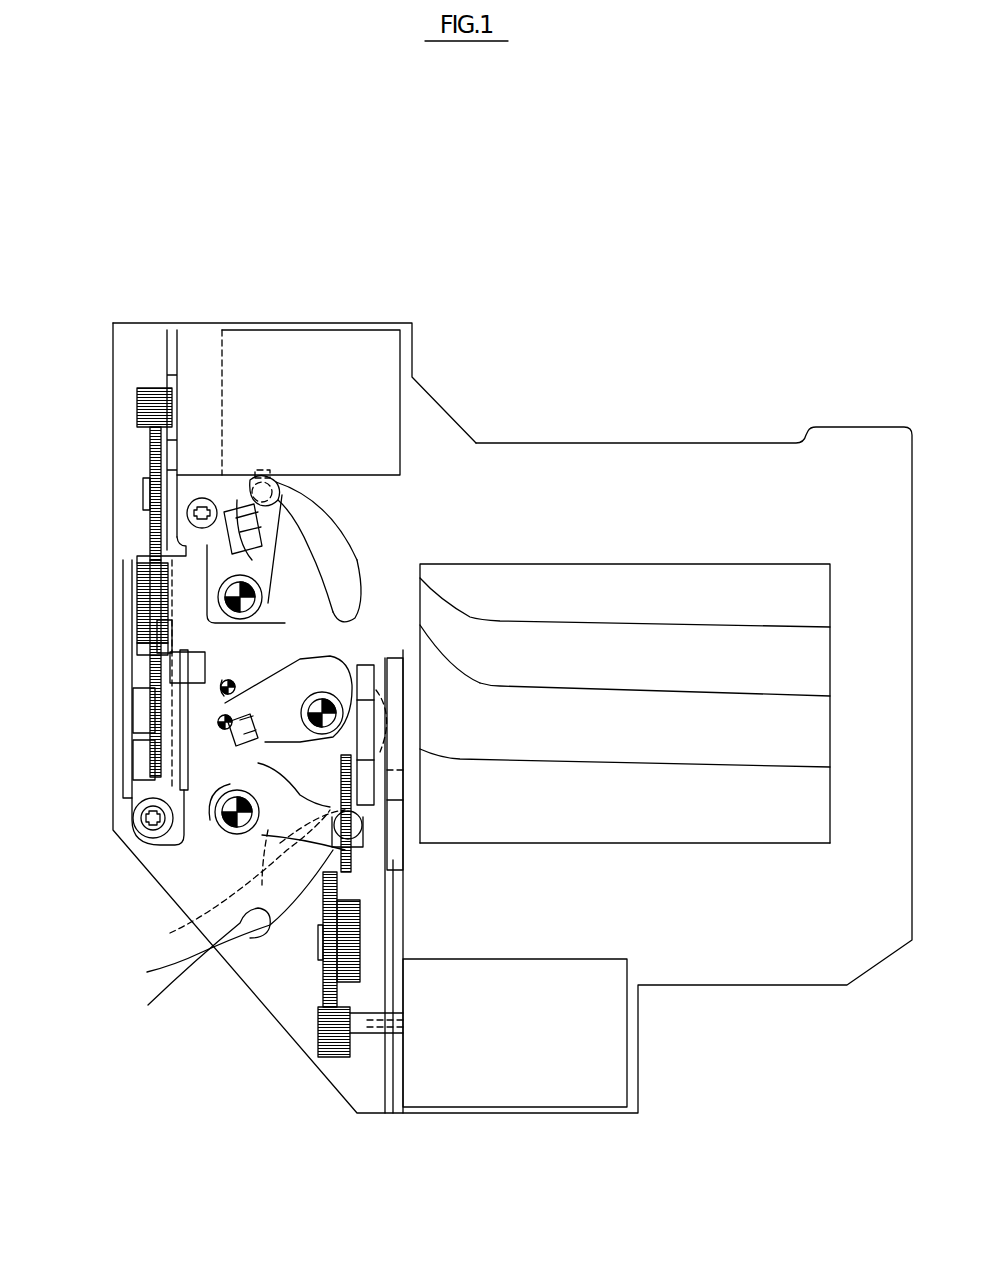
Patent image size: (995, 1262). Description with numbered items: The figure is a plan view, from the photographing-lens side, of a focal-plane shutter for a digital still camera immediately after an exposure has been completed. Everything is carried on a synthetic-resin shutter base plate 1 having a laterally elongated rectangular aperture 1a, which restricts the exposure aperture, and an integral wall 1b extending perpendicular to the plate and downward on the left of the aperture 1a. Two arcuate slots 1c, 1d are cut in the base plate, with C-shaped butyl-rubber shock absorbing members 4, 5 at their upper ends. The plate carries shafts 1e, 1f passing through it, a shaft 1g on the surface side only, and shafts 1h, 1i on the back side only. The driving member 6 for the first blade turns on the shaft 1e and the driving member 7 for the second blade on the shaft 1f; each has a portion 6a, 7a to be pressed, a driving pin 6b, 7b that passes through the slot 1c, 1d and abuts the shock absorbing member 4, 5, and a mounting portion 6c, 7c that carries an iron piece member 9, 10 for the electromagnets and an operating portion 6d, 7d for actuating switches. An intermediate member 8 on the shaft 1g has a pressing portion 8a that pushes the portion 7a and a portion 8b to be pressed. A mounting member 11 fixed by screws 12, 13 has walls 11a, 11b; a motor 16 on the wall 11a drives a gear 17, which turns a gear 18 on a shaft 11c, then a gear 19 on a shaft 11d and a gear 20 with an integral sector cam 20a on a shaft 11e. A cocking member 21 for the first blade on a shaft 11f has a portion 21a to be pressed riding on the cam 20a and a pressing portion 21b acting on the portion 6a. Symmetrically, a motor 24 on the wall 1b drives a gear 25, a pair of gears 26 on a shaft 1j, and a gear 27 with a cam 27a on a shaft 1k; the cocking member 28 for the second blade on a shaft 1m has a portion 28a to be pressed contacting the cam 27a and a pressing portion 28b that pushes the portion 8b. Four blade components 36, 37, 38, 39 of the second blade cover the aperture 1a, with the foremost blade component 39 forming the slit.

The shutter base plate 1 is at (769, 462).
The aperture 1a is at (665, 560).
The wall 1b is at (395, 897).
The arcuate slot 1c is at (400, 535).
The arcuate slot 1d is at (197, 973).
The shaft 1e is at (250, 603).
The shaft 1f is at (232, 833).
The shaft 1g is at (310, 693).
The shaft 1h is at (234, 682).
The shaft 1i is at (222, 731).
The shaft 1j is at (317, 950).
The shaft 1k is at (225, 916).
The shaft 1m is at (427, 657).
The shock absorbing member 4 is at (262, 478).
The shock absorbing member 5 is at (239, 880).
The driving member for the first blade 6 is at (272, 577).
The portion to be pressed 6a is at (215, 630).
The driving pin 6b is at (275, 505).
The mounting portion 6c is at (315, 525).
The operating portion 6d is at (255, 565).
The driving member for the second blade 7 is at (262, 835).
The portion to be pressed 7a is at (260, 810).
The driving pin 7b is at (387, 847).
The mounting portion 7c is at (265, 748).
The operating portion 7d is at (240, 836).
The intermediate member 8 is at (317, 667).
The pressing portion 8a is at (208, 696).
The portion to be pressed 8b is at (404, 745).
The iron piece member 9 is at (318, 530).
The iron piece member 10 is at (235, 725).
The mounting member 11 is at (130, 822).
The wall 11a is at (172, 362).
The wall 11b is at (128, 800).
The shaft 11c is at (148, 485).
The shaft 11d is at (137, 590).
The shaft 11e is at (170, 728).
The shaft 11f is at (347, 547).
The screw 12 is at (203, 497).
The screw 13 is at (153, 838).
The motor 16 is at (345, 345).
The gear 17 is at (148, 390).
The gear 18 is at (148, 452).
The gear 19 is at (170, 640).
The gear 20 is at (140, 690).
The cam 20a is at (130, 778).
The cocking member for the first blade 21 is at (183, 580).
The portion to be pressed 21a is at (150, 670).
The pressing portion 21b is at (145, 648).
The motor 24 is at (597, 1055).
The gear 25 is at (333, 1050).
The pair of gears 26 is at (320, 983).
The gear 27 is at (338, 787).
The cam 27a is at (385, 880).
The cocking member for the second blade 28 is at (404, 668).
The portion to be pressed 28a is at (404, 800).
The pressing portion 28b is at (404, 770).
The blade component 36 is at (816, 812).
The blade component 37 is at (816, 741).
The blade component 38 is at (816, 674).
The blade component 39 is at (816, 598).